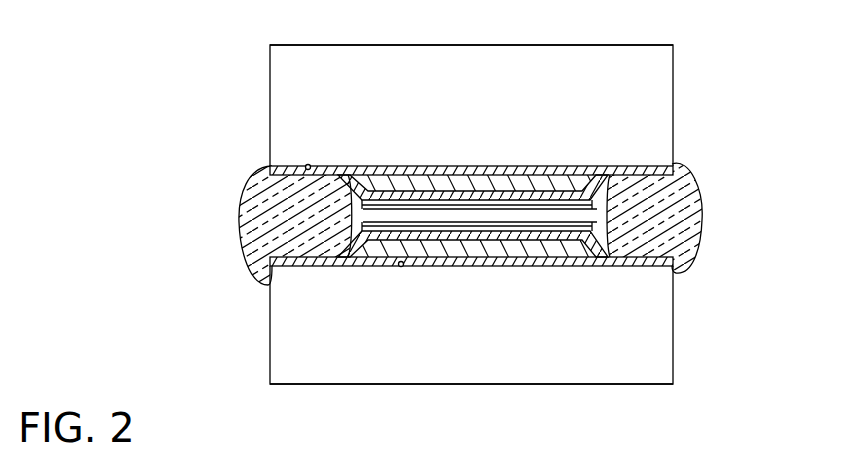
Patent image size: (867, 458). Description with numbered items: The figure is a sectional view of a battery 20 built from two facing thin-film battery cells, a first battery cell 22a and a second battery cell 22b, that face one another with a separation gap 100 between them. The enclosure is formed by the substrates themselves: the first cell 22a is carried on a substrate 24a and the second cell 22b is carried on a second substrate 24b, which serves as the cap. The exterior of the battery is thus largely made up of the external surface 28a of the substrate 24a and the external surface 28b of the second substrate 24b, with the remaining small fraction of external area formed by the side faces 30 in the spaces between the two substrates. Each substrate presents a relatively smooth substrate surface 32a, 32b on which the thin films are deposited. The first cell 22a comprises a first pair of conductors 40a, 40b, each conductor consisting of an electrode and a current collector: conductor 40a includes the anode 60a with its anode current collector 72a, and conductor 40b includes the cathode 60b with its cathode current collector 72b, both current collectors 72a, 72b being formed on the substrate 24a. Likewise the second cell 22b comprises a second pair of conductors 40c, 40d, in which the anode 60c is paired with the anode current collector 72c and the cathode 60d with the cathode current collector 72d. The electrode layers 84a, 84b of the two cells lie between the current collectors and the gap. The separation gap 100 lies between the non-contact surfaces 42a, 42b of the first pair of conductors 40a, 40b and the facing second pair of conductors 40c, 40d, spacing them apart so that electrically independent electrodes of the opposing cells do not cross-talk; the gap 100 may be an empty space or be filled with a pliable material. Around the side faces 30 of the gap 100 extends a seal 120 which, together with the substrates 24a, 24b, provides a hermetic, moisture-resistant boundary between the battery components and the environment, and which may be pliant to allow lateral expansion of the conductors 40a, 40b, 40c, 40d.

The battery 20 is at (180, 70).
The first battery cell 22a is at (600, 204).
The second battery cell 22b is at (600, 224).
The substrate 24a is at (497, 85).
The second substrate 24b is at (500, 368).
The external surface of substrate 28a is at (320, 45).
The external surface of cap 28b is at (607, 384).
The side faces 30 is at (226, 212).
The substrate surface 32a is at (310, 163).
The substrate surface 32b is at (400, 266).
The conductor 40a is at (616, 174).
The conductor 40b is at (567, 166).
The conductor 40c is at (600, 266).
The conductor 40d is at (578, 266).
The non-contact surface 42a is at (360, 213).
The non-contact surface 42b is at (403, 217).
The anode 60a is at (522, 210).
The cathode 60b is at (507, 180).
The anode 60c is at (445, 252).
The cathode 60d is at (487, 245).
The anode current collector 72a is at (660, 166).
The cathode current collector 72b is at (463, 167).
The anode current collector 72c is at (663, 266).
The cathode current collector 72d is at (327, 266).
The first electrode layer 84a is at (422, 190).
The second electrode layer 84b is at (535, 240).
The separation gap 100 is at (380, 222).
The seal 120 is at (695, 180).